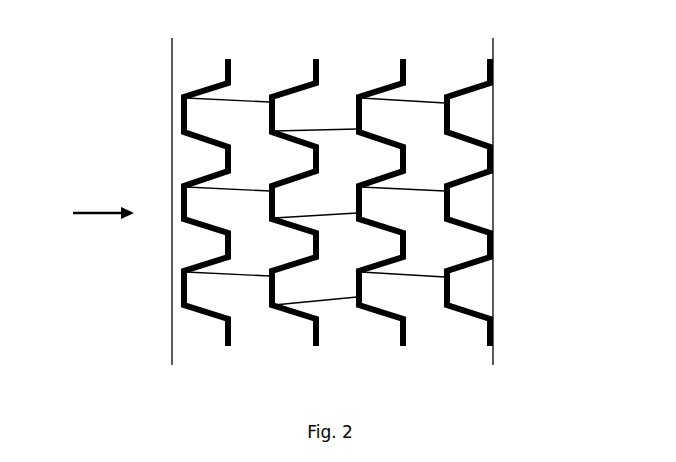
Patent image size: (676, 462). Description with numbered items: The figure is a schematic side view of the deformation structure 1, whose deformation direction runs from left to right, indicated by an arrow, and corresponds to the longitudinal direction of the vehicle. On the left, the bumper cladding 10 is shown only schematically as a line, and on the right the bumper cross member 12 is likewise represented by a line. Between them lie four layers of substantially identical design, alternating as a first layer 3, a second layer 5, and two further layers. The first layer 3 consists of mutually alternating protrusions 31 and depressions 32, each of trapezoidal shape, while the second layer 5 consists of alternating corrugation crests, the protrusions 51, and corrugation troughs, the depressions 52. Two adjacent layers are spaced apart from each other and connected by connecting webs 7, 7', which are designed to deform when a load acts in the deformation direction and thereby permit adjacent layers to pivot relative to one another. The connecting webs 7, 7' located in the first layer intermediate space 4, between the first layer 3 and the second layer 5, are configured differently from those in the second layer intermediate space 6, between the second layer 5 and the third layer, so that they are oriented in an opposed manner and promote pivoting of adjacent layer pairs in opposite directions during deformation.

The deformation structure 1 is at (133, 62).
The first layer 3 is at (200, 92).
The first layer intermediate space 4 is at (230, 220).
The second layer 5 is at (293, 88).
The second layer intermediate space 6 is at (335, 254).
The connecting web 7 is at (315, 169).
The connecting web 7' is at (315, 217).
The bumper cladding 10 is at (172, 325).
The bumper cross member 12 is at (493, 287).
The protrusion 31 is at (228, 162).
The depression 32 is at (183, 112).
The protrusion (corrugation crest) 51 is at (265, 108).
The depression (corrugation trough) 52 is at (313, 153).